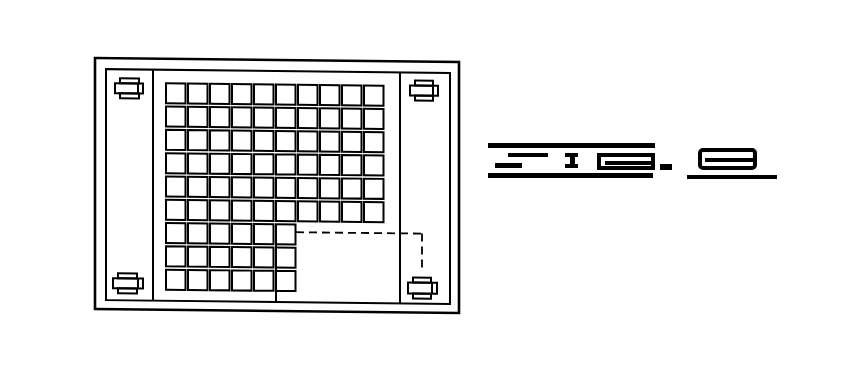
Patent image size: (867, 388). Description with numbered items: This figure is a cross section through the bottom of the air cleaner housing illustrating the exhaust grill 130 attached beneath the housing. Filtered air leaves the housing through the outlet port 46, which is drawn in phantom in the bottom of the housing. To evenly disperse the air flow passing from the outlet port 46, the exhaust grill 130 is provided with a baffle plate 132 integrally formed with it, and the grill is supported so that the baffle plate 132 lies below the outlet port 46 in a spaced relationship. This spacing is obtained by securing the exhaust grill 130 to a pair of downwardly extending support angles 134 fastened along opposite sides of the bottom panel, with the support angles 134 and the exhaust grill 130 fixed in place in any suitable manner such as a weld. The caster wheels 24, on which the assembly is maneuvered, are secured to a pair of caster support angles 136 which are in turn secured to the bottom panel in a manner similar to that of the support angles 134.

The caster wheels 24 is at (115, 90).
The outlet port 46 is at (415, 252).
The exhaust grill 130 is at (192, 81).
The baffle plate 132 is at (343, 285).
The support angles 134 is at (280, 60).
The caster support angles 136 is at (120, 193).